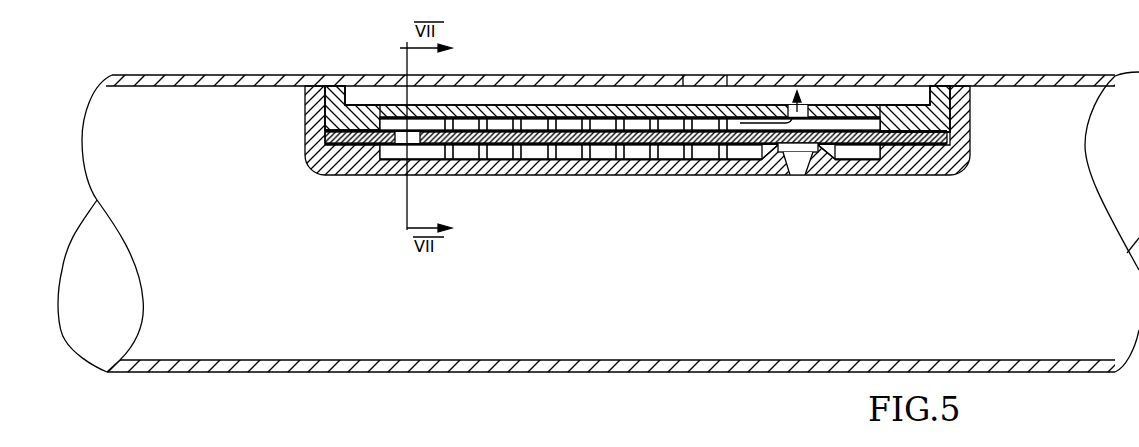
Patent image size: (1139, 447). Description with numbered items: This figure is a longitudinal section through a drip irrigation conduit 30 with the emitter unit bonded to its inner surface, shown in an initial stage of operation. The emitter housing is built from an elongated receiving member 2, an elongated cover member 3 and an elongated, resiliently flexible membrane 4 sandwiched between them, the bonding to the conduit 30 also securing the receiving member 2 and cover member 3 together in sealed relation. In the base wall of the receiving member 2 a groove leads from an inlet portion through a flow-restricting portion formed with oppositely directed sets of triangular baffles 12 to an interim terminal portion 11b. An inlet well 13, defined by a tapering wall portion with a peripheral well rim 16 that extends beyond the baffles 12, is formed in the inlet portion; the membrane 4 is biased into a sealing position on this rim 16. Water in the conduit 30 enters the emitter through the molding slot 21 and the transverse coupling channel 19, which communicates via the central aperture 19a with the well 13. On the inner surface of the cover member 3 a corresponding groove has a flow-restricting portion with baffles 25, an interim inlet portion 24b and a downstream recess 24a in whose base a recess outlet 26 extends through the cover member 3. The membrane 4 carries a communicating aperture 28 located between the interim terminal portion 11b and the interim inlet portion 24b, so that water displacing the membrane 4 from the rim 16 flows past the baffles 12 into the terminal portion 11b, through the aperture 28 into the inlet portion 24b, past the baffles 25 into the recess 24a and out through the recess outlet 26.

The receiving member 2 is at (665, 178).
The cover member 3 is at (512, 92).
The membrane 4 is at (847, 115).
The interim terminal portion 11b is at (430, 153).
The flow-restricting baffles 12 is at (583, 147).
The inlet well 13 is at (820, 153).
The peripheral well rim 16 is at (825, 117).
The coupling channel 19 is at (790, 160).
The central aperture 19a is at (808, 147).
The molding slot 21 is at (800, 168).
The recess 24a is at (880, 117).
The interim inlet portion 24b is at (395, 123).
The flow-restricting baffles 25 is at (558, 118).
The recess outlet 26 is at (790, 104).
The communicating aperture 28 is at (413, 137).
The conduit 30 is at (635, 76).